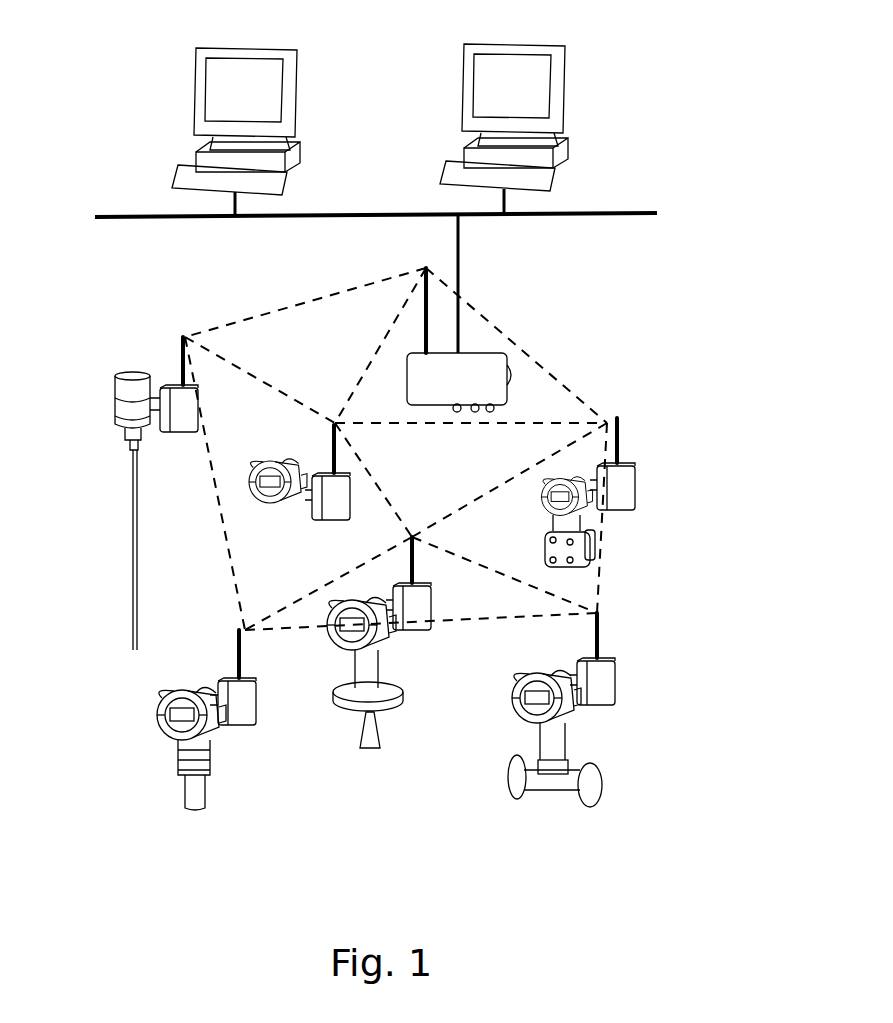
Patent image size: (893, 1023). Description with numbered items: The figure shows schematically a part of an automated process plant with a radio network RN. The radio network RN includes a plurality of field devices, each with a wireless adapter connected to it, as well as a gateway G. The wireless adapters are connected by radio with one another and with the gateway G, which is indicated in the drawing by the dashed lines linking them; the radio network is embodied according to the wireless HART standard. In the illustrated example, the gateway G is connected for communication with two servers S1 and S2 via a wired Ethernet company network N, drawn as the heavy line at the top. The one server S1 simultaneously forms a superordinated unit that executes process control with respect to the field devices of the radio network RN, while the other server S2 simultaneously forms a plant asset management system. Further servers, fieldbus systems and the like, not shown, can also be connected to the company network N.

The server S1 is at (218, 77).
The server S2 is at (478, 82).
The company network N is at (628, 212).
The radio network RN is at (645, 299).
The gateway G is at (476, 380).